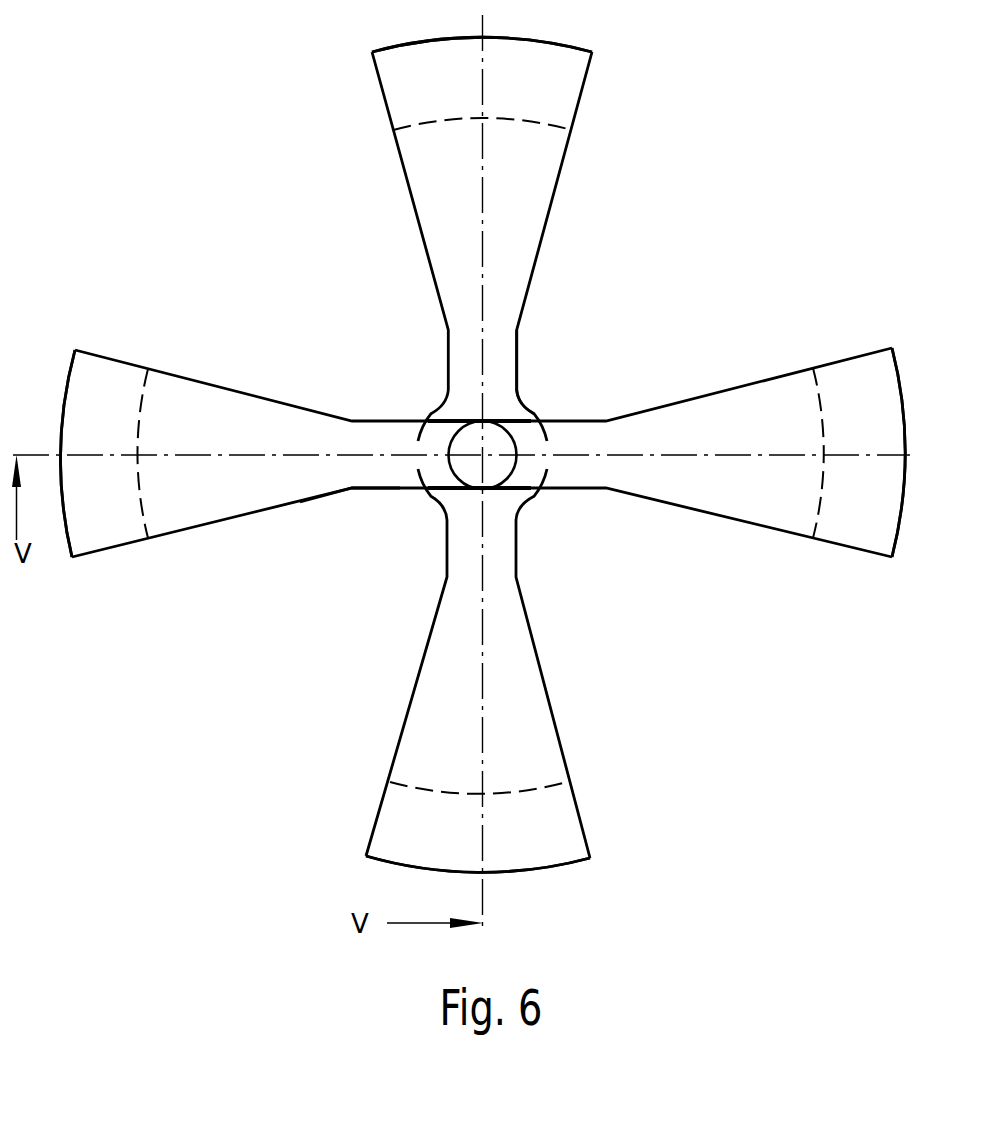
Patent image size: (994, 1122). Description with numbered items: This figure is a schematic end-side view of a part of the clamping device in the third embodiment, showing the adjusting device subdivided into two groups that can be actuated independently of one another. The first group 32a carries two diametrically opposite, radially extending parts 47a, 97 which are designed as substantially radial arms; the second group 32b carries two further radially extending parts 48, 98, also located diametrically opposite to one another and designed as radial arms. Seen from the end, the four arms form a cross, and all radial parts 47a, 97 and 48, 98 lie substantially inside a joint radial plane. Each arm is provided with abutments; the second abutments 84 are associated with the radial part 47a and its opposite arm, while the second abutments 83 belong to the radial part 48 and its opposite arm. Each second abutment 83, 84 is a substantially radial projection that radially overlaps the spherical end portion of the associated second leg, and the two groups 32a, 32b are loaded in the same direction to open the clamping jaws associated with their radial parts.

The second abutment 84 is at (560, 75).
The radially extending part 97 is at (537, 177).
The first group of the adjusting device 32a is at (545, 370).
The second abutment 83 is at (82, 540).
The radially extending part 48 is at (212, 500).
The second group of the adjusting device 32b is at (340, 500).
The radially extending part 98 is at (745, 503).
The radially extending part 47a is at (522, 683).